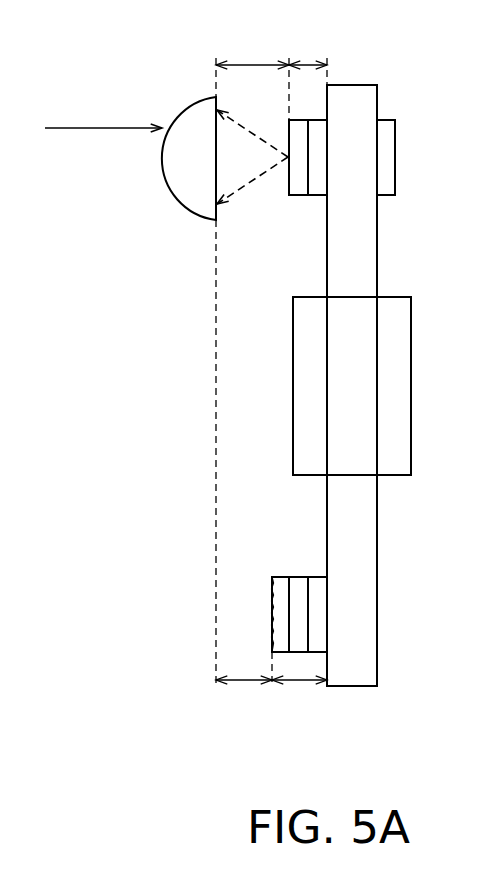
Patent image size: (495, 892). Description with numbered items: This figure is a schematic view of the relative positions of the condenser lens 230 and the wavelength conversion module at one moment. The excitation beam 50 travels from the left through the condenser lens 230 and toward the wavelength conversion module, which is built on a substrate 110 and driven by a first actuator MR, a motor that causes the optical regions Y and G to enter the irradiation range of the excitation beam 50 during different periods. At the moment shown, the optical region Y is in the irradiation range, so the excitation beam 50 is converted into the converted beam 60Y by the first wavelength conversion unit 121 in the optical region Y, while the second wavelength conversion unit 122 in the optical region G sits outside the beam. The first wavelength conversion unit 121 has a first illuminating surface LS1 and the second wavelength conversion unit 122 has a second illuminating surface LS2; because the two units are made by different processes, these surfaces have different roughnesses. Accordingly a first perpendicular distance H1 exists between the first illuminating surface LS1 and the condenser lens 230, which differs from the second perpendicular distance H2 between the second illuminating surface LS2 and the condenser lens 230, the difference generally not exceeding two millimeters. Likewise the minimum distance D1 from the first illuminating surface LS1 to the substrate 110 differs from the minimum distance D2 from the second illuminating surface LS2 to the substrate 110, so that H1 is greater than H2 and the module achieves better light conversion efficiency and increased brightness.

The substrate 110 is at (352, 673).
The first actuator MR is at (395, 385).
The first illuminating surface LS1 is at (288, 180).
The second illuminating surface LS2 is at (270, 598).
The first wavelength conversion unit 121 is at (305, 237).
The second wavelength conversion unit 122 is at (303, 537).
The condenser lens 230 is at (173, 160).
The excitation beam 50 is at (90, 127).
The converted beam 60Y is at (250, 128).
The optical region Y is at (420, 120).
The optical region G is at (418, 577).
The first perpendicular distance H1 is at (252, 45).
The minimum distance D1 is at (308, 45).
The second perpendicular distance H2 is at (244, 699).
The minimum distance D2 is at (299, 699).